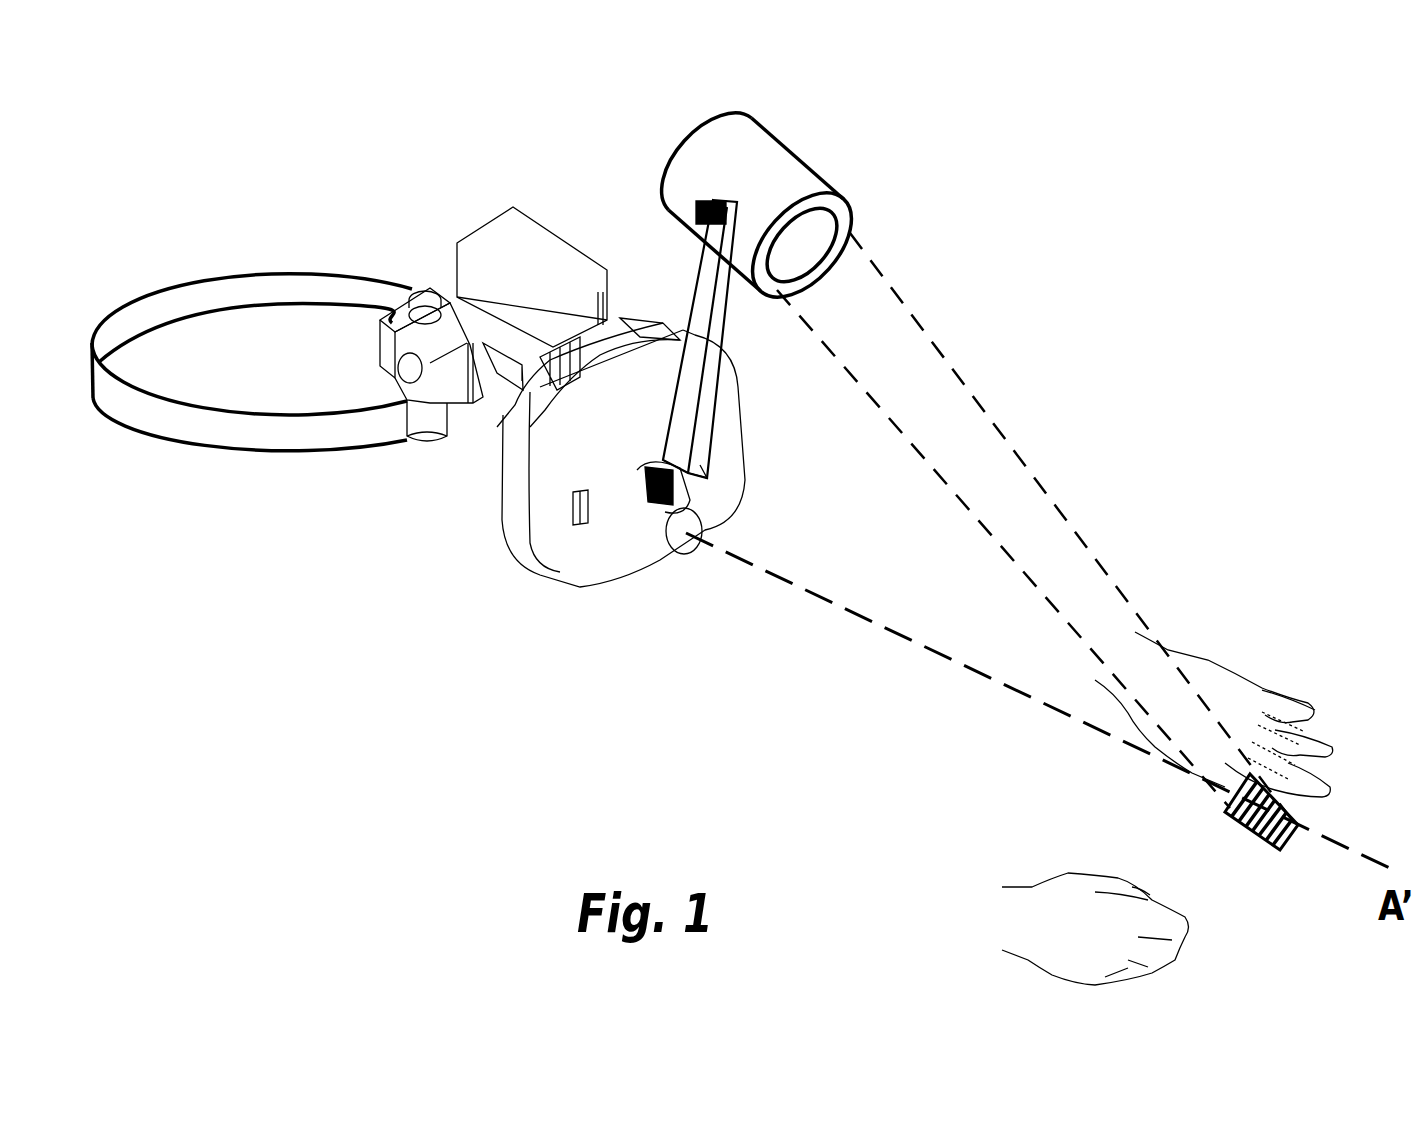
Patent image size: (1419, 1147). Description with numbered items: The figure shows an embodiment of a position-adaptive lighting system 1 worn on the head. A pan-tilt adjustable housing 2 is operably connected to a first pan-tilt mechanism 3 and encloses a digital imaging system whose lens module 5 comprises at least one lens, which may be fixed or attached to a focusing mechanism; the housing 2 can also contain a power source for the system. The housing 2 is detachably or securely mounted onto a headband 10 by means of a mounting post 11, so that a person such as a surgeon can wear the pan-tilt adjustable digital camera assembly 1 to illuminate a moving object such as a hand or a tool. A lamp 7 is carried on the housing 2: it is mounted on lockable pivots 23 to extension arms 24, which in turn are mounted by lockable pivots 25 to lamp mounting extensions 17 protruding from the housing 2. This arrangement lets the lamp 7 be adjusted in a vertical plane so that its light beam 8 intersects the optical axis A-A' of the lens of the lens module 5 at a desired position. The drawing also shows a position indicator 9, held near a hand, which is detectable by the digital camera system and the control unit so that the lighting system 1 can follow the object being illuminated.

The position-adaptive lighting system 1 is at (567, 459).
The pan-tilt adjustable housing 2 is at (567, 563).
The first pan-tilt mechanism 3 is at (515, 267).
The lens module 5 is at (682, 548).
The lamp 7 is at (817, 172).
The light beam 8 is at (937, 342).
The position indicator 9 is at (1263, 830).
The headband 10 is at (297, 457).
The mounting post 11 is at (425, 415).
The lamp mounting extensions 17 is at (670, 506).
The lockable pivots 23 is at (700, 204).
The extension arms 24 is at (697, 317).
The lockable pivots 25 is at (677, 485).